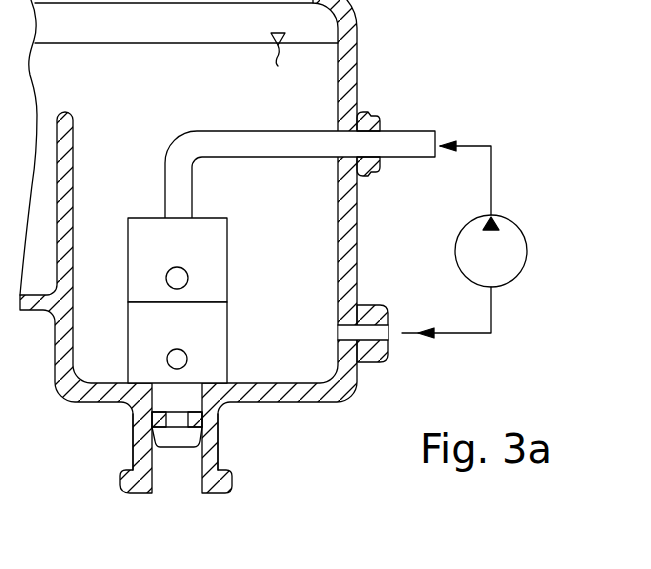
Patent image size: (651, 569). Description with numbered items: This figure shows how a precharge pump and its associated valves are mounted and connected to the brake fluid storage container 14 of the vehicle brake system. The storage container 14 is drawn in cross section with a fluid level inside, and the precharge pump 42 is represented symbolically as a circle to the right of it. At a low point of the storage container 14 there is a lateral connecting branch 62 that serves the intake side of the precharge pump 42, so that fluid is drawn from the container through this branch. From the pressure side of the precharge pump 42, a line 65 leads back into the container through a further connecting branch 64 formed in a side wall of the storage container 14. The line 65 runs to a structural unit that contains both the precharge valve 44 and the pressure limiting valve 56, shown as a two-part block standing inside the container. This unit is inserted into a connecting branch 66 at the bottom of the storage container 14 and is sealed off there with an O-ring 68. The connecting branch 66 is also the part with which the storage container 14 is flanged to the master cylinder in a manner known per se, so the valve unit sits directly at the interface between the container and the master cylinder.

The storage container 14 is at (357, 27).
The precharge pump 42 is at (525, 249).
The precharge valve 44 is at (217, 335).
The pressure limiting valve 56 is at (215, 260).
The lateral connecting branch 62 is at (377, 363).
The further connecting branch 64 is at (373, 123).
The line 65 is at (418, 138).
The connecting branch 66 is at (217, 457).
The O-ring 68 is at (152, 414).